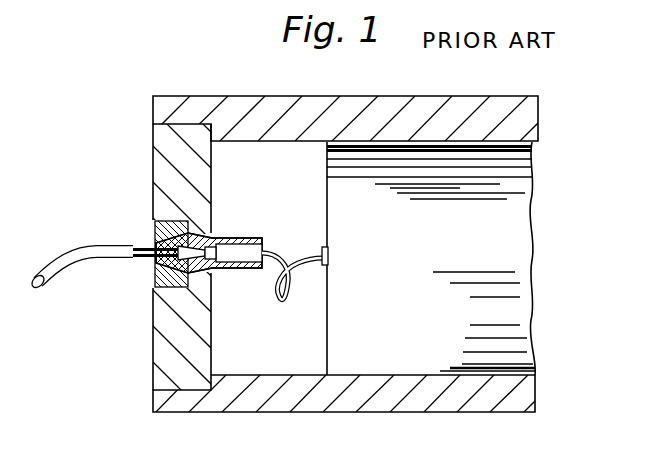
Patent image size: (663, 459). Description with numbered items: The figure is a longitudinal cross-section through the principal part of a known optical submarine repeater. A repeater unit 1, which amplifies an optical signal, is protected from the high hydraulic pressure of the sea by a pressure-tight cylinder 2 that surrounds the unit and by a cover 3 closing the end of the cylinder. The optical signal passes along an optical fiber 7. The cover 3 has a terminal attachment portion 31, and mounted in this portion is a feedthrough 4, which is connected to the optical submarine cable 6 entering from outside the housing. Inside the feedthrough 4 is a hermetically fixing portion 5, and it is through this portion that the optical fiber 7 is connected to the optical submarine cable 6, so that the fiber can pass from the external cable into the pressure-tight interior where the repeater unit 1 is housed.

The repeater unit 1 is at (412, 150).
The pressure-tight cylinder 2 is at (279, 96).
The cover 3 is at (153, 351).
The feedthrough 4 is at (160, 300).
The hermetically fixing portion 5 is at (247, 264).
The optical submarine cable 6 is at (68, 253).
The optical fiber 7 is at (153, 270).
The terminal attachment portion 31 is at (155, 232).